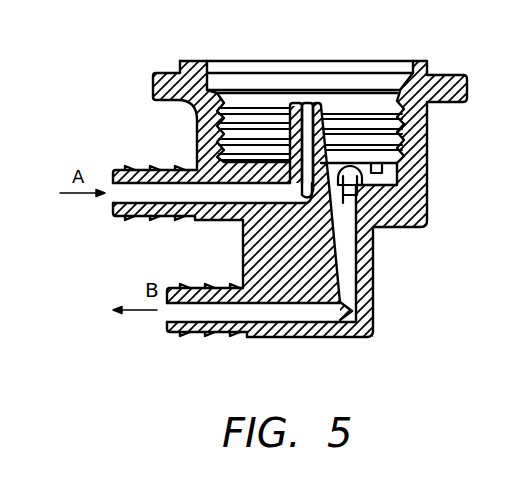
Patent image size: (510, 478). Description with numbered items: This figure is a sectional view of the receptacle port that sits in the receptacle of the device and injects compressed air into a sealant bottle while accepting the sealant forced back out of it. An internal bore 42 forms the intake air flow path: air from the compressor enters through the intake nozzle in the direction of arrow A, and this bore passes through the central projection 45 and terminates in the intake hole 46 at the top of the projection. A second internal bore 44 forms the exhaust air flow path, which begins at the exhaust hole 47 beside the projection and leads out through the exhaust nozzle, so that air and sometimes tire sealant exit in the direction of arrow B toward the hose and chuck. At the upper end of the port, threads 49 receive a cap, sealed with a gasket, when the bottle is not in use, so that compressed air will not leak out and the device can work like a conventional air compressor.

The internal bore 42 is at (135, 195).
The internal bore 44 is at (180, 310).
The central projection 45 is at (280, 137).
The intake hole 46 is at (306, 110).
The exhaust hole 47 is at (372, 176).
The threads 49 is at (226, 92).